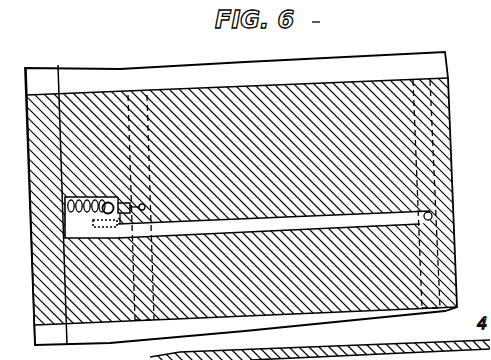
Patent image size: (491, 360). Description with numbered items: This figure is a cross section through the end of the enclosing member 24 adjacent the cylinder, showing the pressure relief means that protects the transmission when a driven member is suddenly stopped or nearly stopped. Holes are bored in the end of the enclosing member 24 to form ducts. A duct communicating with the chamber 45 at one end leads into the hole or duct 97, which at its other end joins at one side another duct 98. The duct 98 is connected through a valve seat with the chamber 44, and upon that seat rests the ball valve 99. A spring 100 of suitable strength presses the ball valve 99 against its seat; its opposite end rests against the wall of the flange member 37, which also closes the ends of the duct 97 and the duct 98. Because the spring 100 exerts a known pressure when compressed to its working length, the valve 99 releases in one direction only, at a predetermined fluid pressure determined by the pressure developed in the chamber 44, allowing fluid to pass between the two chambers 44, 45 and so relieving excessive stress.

The enclosing member 24 is at (163, 107).
The flange member 37 is at (39, 107).
The duct 98 is at (76, 197).
The ball valve 99 is at (121, 212).
The spring 100 is at (91, 213).
The chamber 44 is at (147, 204).
The duct 97 is at (268, 226).
The chamber 45 is at (433, 215).